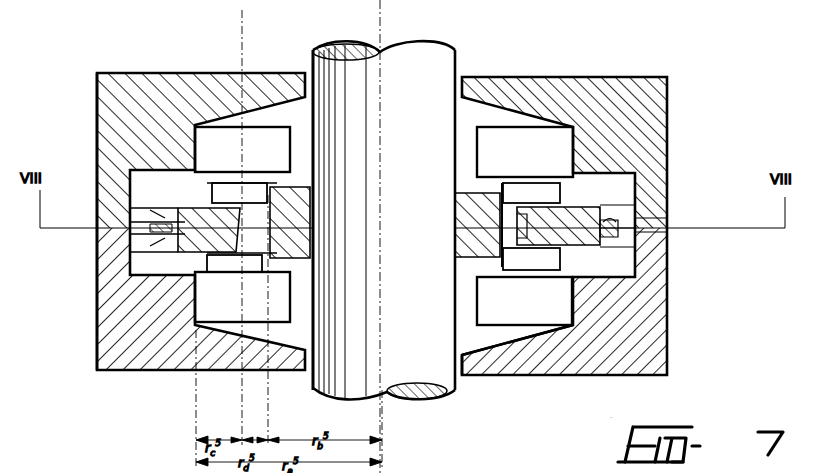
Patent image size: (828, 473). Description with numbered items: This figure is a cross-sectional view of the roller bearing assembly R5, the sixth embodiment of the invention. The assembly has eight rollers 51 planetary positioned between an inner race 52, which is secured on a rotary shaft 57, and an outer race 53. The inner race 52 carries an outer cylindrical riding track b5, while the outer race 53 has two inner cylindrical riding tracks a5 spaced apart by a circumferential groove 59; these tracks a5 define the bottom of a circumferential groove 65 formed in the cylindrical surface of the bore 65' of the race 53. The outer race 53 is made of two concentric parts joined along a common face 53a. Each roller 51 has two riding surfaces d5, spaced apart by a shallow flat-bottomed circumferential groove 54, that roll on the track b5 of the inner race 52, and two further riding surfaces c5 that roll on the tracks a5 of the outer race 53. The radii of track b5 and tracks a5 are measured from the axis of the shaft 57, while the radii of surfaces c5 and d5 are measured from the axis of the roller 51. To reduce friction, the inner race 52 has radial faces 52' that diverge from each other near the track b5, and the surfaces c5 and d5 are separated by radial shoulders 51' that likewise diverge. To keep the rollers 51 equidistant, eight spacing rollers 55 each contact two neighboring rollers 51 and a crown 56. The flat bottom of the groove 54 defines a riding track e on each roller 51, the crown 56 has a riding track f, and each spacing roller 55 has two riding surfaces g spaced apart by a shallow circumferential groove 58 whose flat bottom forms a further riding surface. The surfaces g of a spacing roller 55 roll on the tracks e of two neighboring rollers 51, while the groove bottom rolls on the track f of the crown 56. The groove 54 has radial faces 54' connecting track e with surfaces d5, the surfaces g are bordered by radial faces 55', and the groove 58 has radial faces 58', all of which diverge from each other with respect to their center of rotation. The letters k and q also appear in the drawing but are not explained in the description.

The roller 51 is at (623, 169).
The radial shoulders 51' is at (560, 178).
The inner race 52 is at (530, 112).
The radial faces 52' is at (545, 166).
The outer race 53 is at (672, 112).
The common face 53a is at (704, 218).
The circumferential groove 54 is at (590, 221).
The radial faces 54' is at (558, 293).
The spacing roller 55 is at (652, 260).
The radial faces 55' is at (651, 224).
The crown 56 is at (640, 228).
The rotary shaft 57 is at (430, 80).
The circumferential groove 58 is at (692, 244).
The radial faces 58' is at (664, 300).
The circumferential groove 59 is at (150, 150).
The circumferential groove 65 is at (517, 379).
The bore 65' is at (468, 387).
The inner cylindrical riding tracks a5 is at (182, 75).
The outer cylindrical riding track b5 is at (273, 265).
The riding surfaces c5 is at (318, 76).
The riding surfaces d5 is at (140, 183).
The riding track e is at (254, 222).
The riding track f is at (140, 212).
The riding surfaces g is at (195, 250).
The bearing ring k is at (250, 215).
The hub element q is at (220, 222).
The roller bearing assembly R5 is at (655, 55).